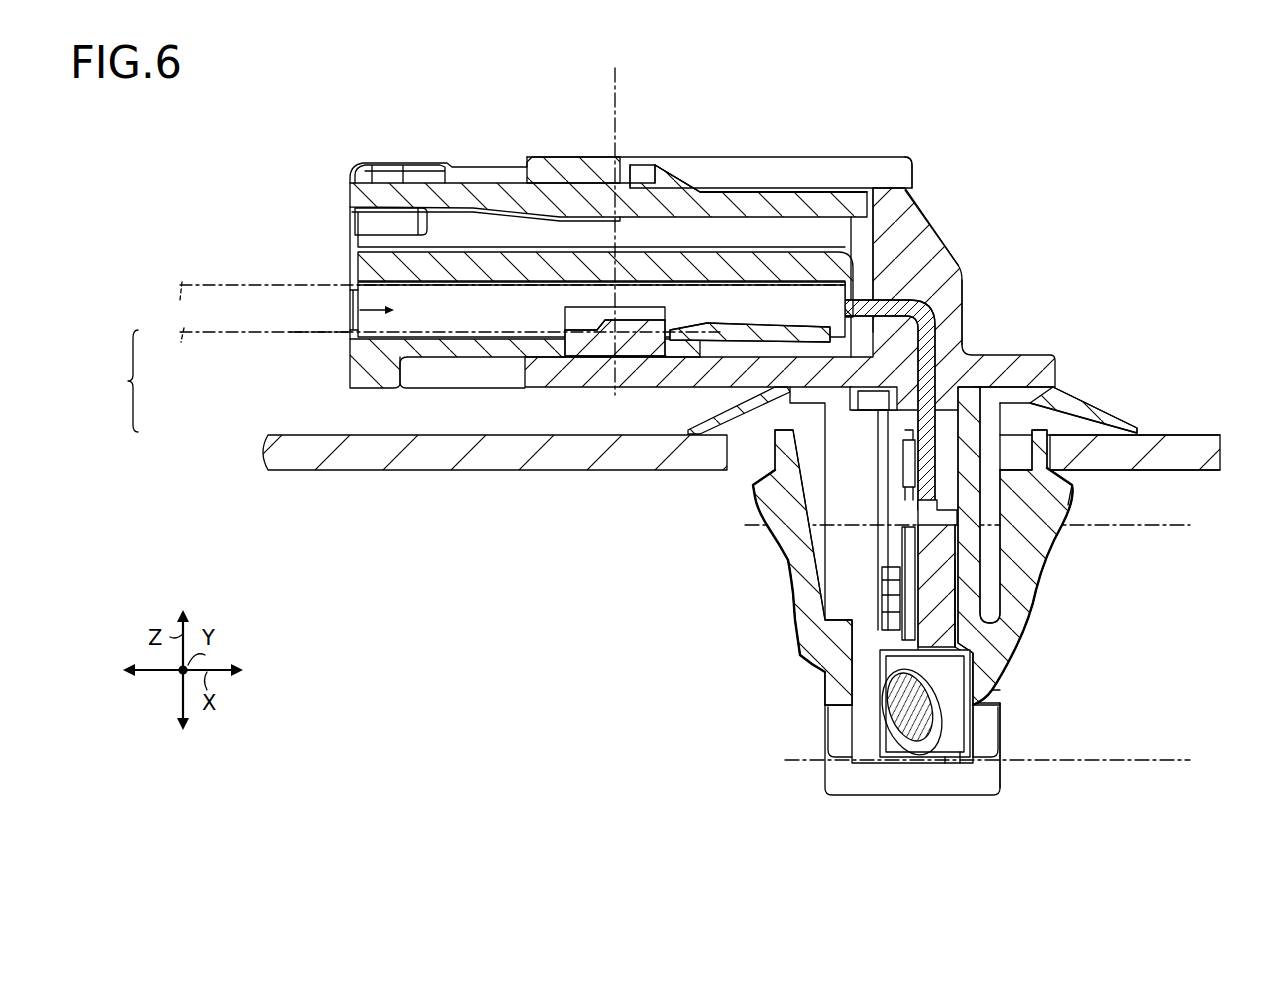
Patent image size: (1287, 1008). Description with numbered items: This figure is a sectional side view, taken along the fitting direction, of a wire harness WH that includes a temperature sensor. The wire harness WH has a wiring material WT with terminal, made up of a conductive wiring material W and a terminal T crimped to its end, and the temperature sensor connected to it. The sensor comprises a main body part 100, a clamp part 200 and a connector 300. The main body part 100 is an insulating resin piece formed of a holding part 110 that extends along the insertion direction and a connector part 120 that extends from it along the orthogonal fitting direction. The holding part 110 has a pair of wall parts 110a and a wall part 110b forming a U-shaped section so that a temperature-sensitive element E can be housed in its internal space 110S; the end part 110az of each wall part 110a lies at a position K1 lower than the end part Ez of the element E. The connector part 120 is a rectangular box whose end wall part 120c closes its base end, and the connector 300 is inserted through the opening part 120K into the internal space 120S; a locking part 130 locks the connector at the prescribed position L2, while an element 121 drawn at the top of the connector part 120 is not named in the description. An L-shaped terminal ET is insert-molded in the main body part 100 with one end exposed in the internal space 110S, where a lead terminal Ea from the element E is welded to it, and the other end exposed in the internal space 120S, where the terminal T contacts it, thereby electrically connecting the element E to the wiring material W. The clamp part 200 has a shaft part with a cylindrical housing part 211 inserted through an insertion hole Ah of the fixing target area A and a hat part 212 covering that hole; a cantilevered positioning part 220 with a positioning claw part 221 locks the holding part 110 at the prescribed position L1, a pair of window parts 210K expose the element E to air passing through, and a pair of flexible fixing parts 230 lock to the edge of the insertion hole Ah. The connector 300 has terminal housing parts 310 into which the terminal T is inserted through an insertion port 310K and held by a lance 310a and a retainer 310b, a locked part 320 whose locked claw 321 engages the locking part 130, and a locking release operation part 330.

The main body part 100 is at (742, 447).
The holding part 110 is at (938, 655).
The internal space 110S is at (900, 500).
The wall part 110a is at (1022, 765).
The end part 110az is at (975, 775).
The wall part 110b is at (962, 600).
The connector part 120 is at (719, 145).
The opening part 120K is at (520, 364).
The internal space 120S is at (850, 258).
The wall part 120c is at (962, 272).
The cover portion of first housing 121 is at (848, 157).
The locking part 130 is at (577, 148).
The clamp part 200 is at (973, 577).
The window part 210K is at (840, 714).
The housing part 211 is at (1003, 680).
The hat part 212 is at (1092, 412).
The positioning part 220 is at (965, 583).
The positioning claw part 221 is at (965, 503).
The fixing part 230 is at (745, 500).
The connector 300 is at (582, 243).
The terminal housing part 310 is at (550, 339).
The insertion port 310K is at (350, 295).
The lance 310a is at (755, 340).
The retainer 310b is at (575, 350).
The locked part 320 is at (668, 168).
The locked claw 321 is at (640, 165).
The locking release operation part 330 is at (415, 175).
The fixing target area A is at (320, 473).
The insertion hole Ah is at (1025, 455).
The temperature-sensitive element E is at (905, 745).
The lead terminal Ea is at (910, 515).
The end part Ez is at (935, 770).
The terminal ET is at (925, 310).
The position K1 is at (1003, 761).
The prescribed position L1 is at (982, 525).
The prescribed position L2 is at (615, 219).
The terminal T is at (348, 314).
The wiring material W is at (235, 337).
The wire harness WH is at (1150, 97).
The wiring material with terminal WT is at (112, 381).